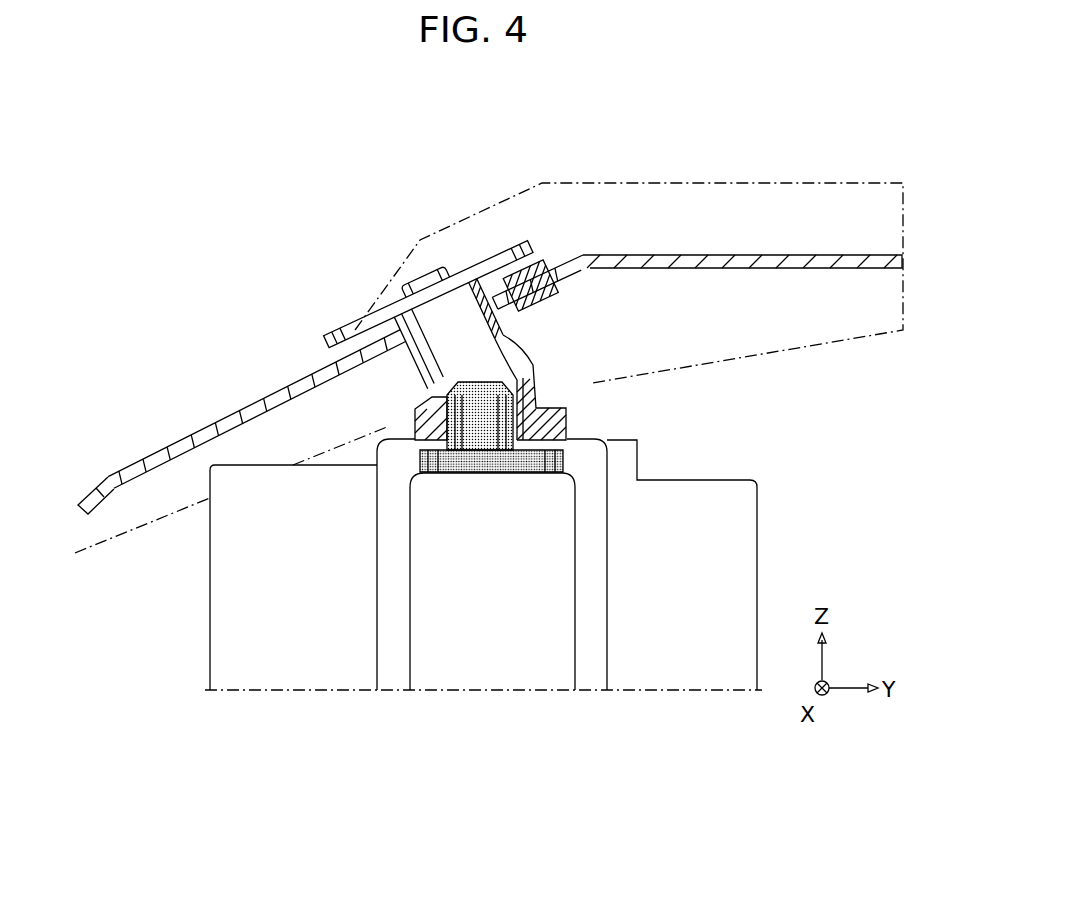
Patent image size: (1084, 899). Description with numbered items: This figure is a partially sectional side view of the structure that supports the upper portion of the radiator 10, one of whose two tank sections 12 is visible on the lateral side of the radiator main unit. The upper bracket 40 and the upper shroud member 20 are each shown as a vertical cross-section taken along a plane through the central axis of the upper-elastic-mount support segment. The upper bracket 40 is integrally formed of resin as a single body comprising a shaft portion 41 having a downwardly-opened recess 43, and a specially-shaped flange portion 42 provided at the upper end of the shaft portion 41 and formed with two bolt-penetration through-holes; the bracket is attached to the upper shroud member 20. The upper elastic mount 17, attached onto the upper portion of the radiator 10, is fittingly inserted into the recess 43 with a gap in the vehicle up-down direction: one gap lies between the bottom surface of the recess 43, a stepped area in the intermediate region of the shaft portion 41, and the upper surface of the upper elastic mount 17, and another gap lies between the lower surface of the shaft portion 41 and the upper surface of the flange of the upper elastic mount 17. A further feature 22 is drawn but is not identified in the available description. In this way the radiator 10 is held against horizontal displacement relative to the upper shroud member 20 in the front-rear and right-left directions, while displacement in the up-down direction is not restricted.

The radiator 10 is at (773, 467).
The tank section 12 is at (502, 670).
The upper elastic mount 17 is at (478, 427).
The upper shroud member 20 is at (800, 255).
The bent portion of bus bar 22 is at (500, 288).
The upper bracket 40 is at (473, 267).
The shaft portion 41 is at (552, 392).
The flange portion 42 is at (533, 283).
The recess 43 is at (537, 447).